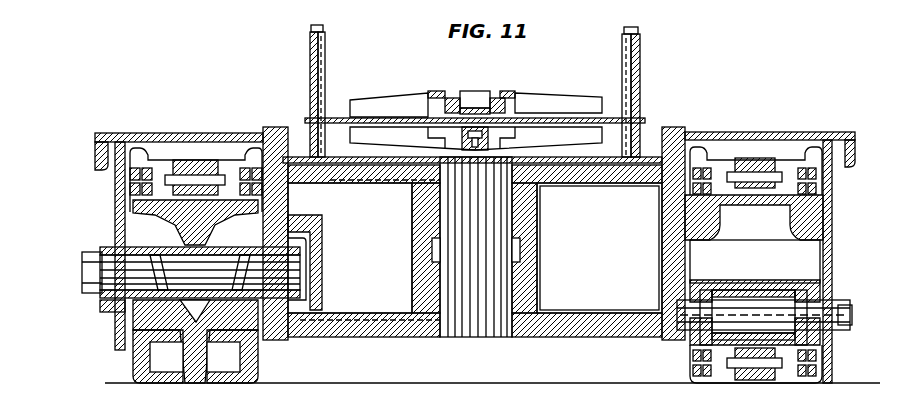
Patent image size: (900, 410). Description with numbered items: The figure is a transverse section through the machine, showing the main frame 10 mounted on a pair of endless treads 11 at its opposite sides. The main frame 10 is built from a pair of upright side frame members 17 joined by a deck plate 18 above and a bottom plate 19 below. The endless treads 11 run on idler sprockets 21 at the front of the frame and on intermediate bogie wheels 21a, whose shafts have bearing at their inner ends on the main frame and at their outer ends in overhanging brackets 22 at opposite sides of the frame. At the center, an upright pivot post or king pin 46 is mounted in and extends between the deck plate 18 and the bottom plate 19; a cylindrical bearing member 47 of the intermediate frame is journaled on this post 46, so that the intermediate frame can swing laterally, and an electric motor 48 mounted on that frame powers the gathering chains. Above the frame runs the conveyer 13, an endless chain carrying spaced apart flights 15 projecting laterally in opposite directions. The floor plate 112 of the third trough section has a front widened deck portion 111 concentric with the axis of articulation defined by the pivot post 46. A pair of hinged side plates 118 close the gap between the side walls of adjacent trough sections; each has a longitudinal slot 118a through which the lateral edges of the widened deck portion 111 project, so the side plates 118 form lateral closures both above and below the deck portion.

The main frame 10 is at (492, 232).
The endless treads 11 is at (256, 371).
The conveyer 13 is at (492, 89).
The flights 15 is at (582, 101).
The upright side frame members 17 is at (274, 128).
The deck plate 18 is at (592, 172).
The bottom plate 19 is at (580, 327).
The idler sprockets 21 is at (205, 373).
The bogie wheels 21a is at (745, 321).
The overhanging brackets 22 is at (116, 197).
The pivot post 46 is at (487, 270).
The cylindrical bearing member 47 is at (537, 277).
The electric motor 48 is at (633, 269).
The widened deck portion 111 is at (337, 124).
The floor plate 112 is at (385, 108).
The side plates 118 is at (318, 75).
The longitudinal slots 118a is at (306, 119).